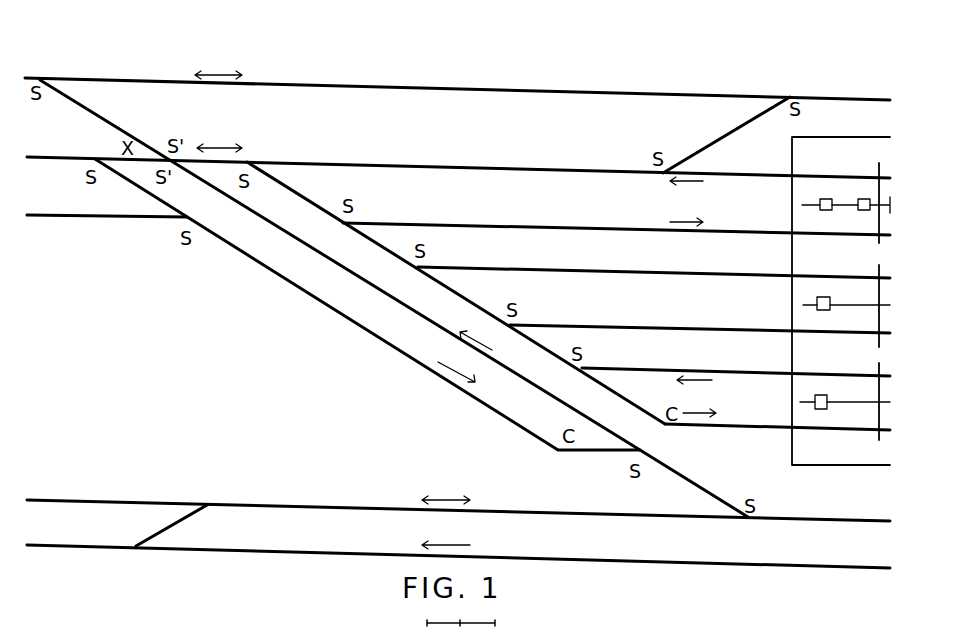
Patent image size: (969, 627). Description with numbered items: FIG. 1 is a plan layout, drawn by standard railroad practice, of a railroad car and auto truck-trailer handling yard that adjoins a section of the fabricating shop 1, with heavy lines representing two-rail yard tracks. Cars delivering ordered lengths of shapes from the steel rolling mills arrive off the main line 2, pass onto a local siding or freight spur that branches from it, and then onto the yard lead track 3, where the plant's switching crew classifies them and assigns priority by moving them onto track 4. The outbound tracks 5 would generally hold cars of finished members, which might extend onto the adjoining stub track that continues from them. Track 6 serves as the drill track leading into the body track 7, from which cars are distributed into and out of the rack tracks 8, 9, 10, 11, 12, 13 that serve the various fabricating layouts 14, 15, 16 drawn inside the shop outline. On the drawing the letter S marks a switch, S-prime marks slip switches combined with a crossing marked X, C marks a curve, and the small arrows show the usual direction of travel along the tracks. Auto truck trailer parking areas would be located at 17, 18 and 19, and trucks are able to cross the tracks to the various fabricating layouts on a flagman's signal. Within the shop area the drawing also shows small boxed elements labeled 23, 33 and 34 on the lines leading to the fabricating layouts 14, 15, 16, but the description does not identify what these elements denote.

The fabricating shop 1 is at (849, 144).
The main line 2 is at (55, 500).
The yard lead track 3 is at (288, 231).
The track 4 is at (30, 78).
The outbound tracks 5 is at (316, 304).
The drill track 6 is at (40, 158).
The body track 7 is at (456, 297).
The rack track 8 is at (734, 429).
The rack track 9 is at (734, 376).
The rack track 10 is at (732, 334).
The rack track 11 is at (726, 281).
The rack track 12 is at (722, 238).
The rack track 13 is at (723, 180).
The fabricating layout 14 is at (870, 400).
The fabricating layout 15 is at (874, 303).
The fabricating layout 16 is at (848, 198).
The auto truck trailer parking area 17 is at (196, 24).
The auto truck trailer parking area 18 is at (774, 37).
The auto truck trailer parking area 19 is at (291, 438).
The switch contact 23 is at (826, 395).
The switch contact 33 is at (827, 298).
The switch contact 34 is at (827, 200).